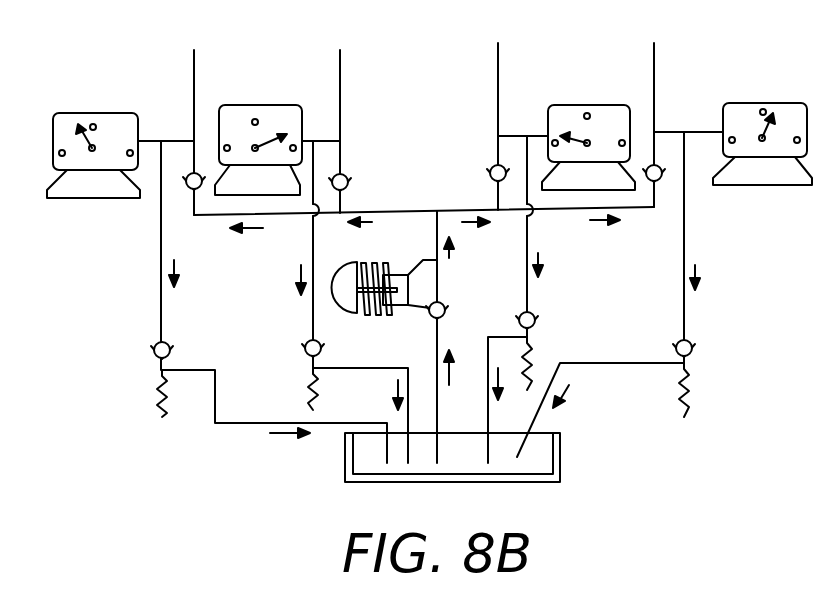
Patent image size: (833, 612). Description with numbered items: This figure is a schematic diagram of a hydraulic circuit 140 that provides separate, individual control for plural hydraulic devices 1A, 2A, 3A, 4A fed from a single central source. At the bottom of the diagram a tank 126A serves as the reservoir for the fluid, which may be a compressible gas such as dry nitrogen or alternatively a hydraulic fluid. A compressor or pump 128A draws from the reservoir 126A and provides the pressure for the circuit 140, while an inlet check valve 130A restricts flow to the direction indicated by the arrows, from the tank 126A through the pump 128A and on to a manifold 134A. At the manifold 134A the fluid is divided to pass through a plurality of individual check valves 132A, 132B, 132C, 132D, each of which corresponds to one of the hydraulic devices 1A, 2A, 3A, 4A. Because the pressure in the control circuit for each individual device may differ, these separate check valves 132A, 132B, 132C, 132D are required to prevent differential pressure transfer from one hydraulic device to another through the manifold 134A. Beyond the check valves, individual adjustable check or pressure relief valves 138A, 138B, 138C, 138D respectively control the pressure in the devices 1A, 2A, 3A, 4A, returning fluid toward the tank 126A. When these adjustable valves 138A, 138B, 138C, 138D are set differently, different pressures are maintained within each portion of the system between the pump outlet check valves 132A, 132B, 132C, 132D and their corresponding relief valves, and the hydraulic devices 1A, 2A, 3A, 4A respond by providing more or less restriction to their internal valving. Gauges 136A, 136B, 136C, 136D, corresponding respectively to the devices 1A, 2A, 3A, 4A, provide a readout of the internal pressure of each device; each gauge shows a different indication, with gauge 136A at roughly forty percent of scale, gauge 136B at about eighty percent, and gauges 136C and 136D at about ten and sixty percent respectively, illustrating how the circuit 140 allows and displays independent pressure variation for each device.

The hydraulic device 1A is at (194, 117).
The hydraulic device 2A is at (339, 116).
The hydraulic device 3A is at (494, 112).
The hydraulic device 4A is at (649, 111).
The tank 126A is at (345, 462).
The compressor 128A is at (364, 263).
The inlet check valve 130A is at (445, 306).
The check valve 132A is at (185, 184).
The check valve 132B is at (348, 180).
The check valve 132C is at (490, 165).
The check valve 132D is at (670, 178).
The manifold 134A is at (398, 212).
The gauge 136A is at (130, 72).
The gauge 136B is at (300, 72).
The gauge 136C is at (612, 70).
The gauge 136D is at (725, 103).
The adjustable pressure relief valve 138A is at (153, 350).
The adjustable pressure relief valve 138B is at (305, 345).
The adjustable pressure relief valve 138C is at (536, 320).
The adjustable pressure relief valve 138D is at (694, 348).
The circuit 140 is at (645, 457).